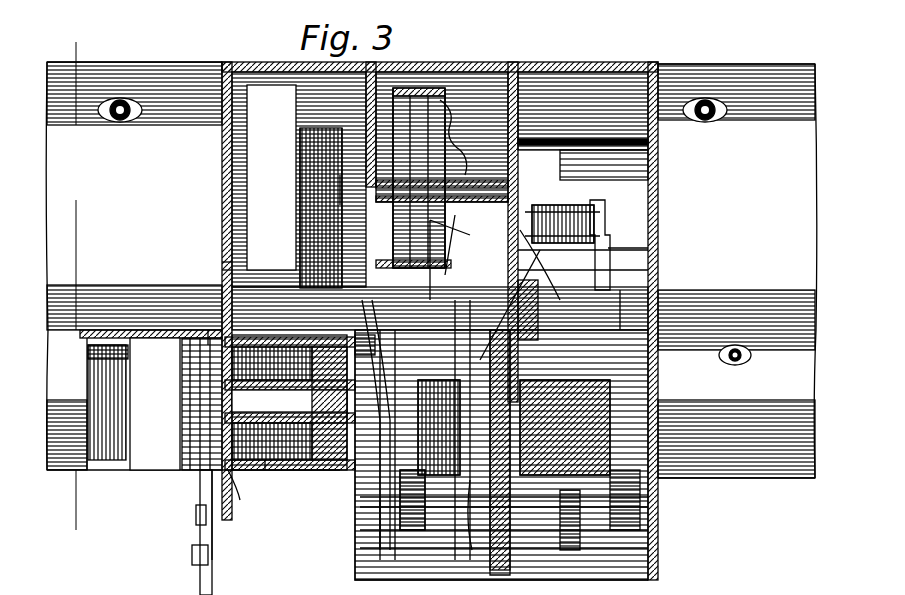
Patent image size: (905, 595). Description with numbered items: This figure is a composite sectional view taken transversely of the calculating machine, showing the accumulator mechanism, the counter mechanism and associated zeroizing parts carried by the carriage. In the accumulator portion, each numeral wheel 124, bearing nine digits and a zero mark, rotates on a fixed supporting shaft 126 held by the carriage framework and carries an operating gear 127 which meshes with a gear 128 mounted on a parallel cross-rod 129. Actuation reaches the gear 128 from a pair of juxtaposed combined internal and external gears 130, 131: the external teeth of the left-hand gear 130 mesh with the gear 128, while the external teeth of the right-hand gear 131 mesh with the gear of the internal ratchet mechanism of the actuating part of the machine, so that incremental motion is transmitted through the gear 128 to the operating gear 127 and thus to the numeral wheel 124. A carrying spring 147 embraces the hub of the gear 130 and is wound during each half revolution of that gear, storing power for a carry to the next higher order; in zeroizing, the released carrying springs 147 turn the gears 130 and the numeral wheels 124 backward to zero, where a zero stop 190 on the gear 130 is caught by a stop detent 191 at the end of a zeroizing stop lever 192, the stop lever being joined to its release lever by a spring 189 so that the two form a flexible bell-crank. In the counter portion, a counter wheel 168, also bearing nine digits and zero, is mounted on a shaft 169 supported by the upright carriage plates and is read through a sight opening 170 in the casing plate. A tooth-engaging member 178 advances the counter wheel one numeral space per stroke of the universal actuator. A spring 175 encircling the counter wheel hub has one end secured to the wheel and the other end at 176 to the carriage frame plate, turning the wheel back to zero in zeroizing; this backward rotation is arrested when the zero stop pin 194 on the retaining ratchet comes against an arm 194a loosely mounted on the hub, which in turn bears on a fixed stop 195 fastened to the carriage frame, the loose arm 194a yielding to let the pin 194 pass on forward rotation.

The numeral wheel 124 is at (255, 128).
The fixed supporting shaft 126 is at (348, 195).
The operating gear 127 is at (345, 135).
The gear 128 is at (222, 262).
The cross-rod 129 is at (222, 270).
The combined internal and external gear 130 is at (540, 215).
The combined internal and external gear 131 is at (565, 215).
The carrying spring 147 is at (438, 500).
The counter wheel 168 is at (140, 465).
The shaft 169 is at (320, 470).
The sight opening 170 is at (735, 365).
The spring 175 is at (108, 360).
The spring anchorage 176 is at (95, 345).
The tooth-engaging member 178 is at (186, 473).
The spring 189 is at (575, 212).
The zero stop 190 is at (430, 345).
The stop detent 191 is at (500, 270).
The zeroizing stop lever 192 is at (448, 262).
The zero stop pin 194 is at (208, 330).
The arm 194a is at (240, 475).
The fixed stop 195 is at (214, 500).